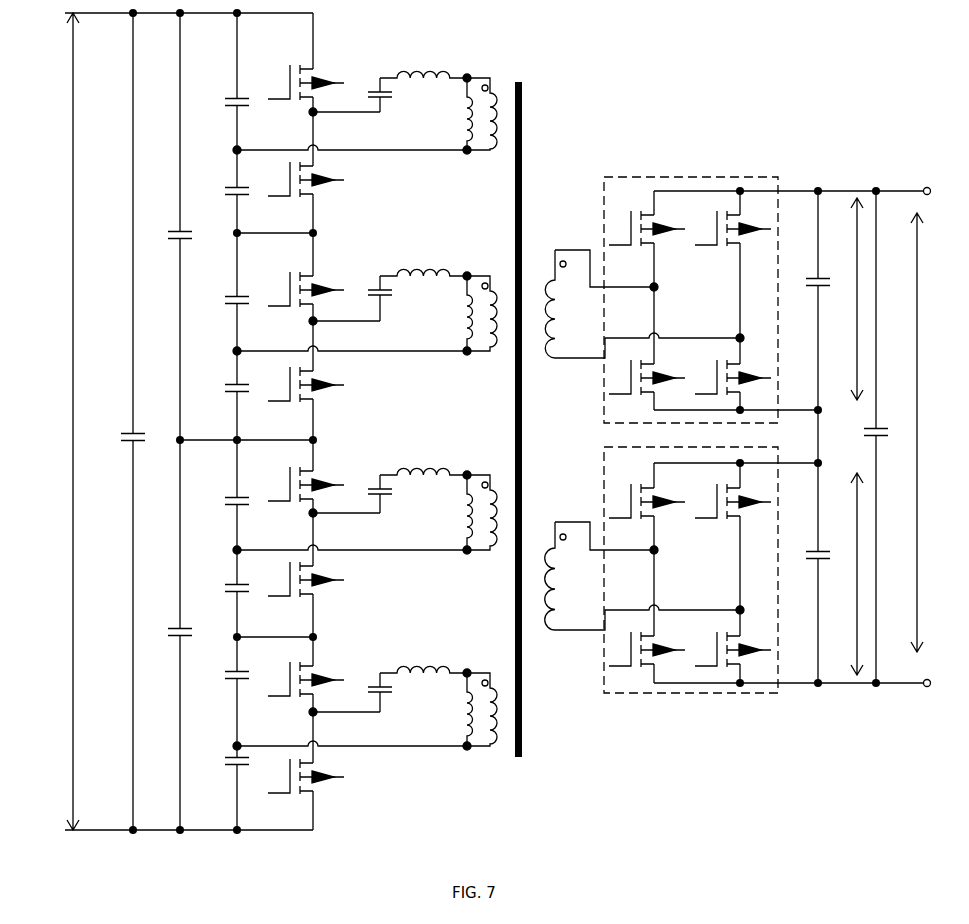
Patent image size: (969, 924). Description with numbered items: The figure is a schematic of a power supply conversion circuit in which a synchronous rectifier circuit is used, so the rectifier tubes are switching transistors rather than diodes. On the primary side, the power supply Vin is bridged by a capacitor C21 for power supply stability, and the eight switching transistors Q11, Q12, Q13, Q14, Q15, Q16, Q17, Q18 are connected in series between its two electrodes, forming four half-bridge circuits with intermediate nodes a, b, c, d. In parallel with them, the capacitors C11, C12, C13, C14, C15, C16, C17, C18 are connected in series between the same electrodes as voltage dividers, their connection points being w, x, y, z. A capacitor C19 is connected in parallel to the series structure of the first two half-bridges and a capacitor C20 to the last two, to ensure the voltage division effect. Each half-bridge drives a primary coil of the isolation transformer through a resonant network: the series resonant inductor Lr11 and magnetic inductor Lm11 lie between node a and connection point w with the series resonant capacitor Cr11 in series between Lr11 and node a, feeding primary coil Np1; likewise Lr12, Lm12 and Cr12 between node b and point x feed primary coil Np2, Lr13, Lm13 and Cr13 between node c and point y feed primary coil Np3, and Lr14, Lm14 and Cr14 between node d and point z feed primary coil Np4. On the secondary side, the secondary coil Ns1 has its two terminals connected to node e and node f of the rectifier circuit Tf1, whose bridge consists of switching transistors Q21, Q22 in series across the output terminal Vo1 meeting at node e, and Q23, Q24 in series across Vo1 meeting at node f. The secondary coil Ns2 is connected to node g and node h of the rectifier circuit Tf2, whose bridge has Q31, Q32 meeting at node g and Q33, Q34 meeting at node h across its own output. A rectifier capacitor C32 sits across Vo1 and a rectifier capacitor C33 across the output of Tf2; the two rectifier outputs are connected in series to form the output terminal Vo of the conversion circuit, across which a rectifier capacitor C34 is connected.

The power supply Vin is at (54, 421).
The capacitor C21 is at (119, 421).
The capacitor C19 is at (170, 226).
The capacitor C20 is at (170, 635).
The capacitor C11 is at (225, 115).
The capacitor C12 is at (225, 204).
The capacitor C13 is at (225, 312).
The capacitor C14 is at (225, 401).
The capacitor C15 is at (225, 514).
The capacitor C16 is at (225, 601).
The capacitor C17 is at (225, 687).
The capacitor C18 is at (225, 773).
The switching transistor Q11 is at (298, 82).
The switching transistor Q12 is at (298, 179).
The switching transistor Q13 is at (298, 289).
The switching transistor Q14 is at (298, 384).
The switching transistor Q15 is at (298, 484).
The switching transistor Q16 is at (298, 579).
The switching transistor Q17 is at (298, 679).
The switching transistor Q18 is at (298, 776).
The intermediate node a is at (333, 118).
The intermediate node b is at (335, 323).
The intermediate node c is at (335, 518).
The intermediate node d is at (337, 717).
The connection point w is at (333, 150).
The connection point x is at (336, 352).
The connection point y is at (338, 547).
The connection point z is at (336, 746).
The series resonant inductor Lr11 is at (423, 65).
The series resonant inductor Lr12 is at (423, 263).
The series resonant inductor Lr13 is at (423, 462).
The series resonant inductor Lr14 is at (423, 660).
The series resonant capacitor Cr11 is at (400, 95).
The series resonant capacitor Cr12 is at (400, 298).
The series resonant capacitor Cr13 is at (400, 494).
The series resonant capacitor Cr14 is at (400, 692).
The magnetic inductor Lm11 is at (445, 114).
The magnetic inductor Lm12 is at (445, 313).
The magnetic inductor Lm13 is at (445, 512).
The magnetic inductor Lm14 is at (445, 709).
The primary coil Np1 is at (488, 126).
The primary coil Np2 is at (488, 325).
The primary coil Np3 is at (488, 523).
The primary coil Np4 is at (488, 722).
The secondary coil Ns1 is at (640, 316).
The secondary coil Ns2 is at (640, 589).
The rectifier circuit Tf1 is at (727, 162).
The rectifier circuit Tf2 is at (703, 693).
The switching transistor Q21 is at (654, 239).
The switching transistor Q22 is at (654, 373).
The switching transistor Q23 is at (736, 239).
The switching transistor Q24 is at (736, 373).
The switching transistor Q31 is at (654, 512).
The switching transistor Q32 is at (654, 645).
The switching transistor Q33 is at (736, 507).
The switching transistor Q34 is at (736, 645).
The node e is at (663, 292).
The node f is at (743, 330).
The node g is at (664, 552).
The node h is at (745, 603).
The rectifier capacitor C32 is at (807, 327).
The rectifier capacitor C33 is at (807, 573).
The rectifier capacitor C34 is at (889, 437).
The output terminal Vo1 is at (845, 436).
The output terminal Vo is at (928, 432).